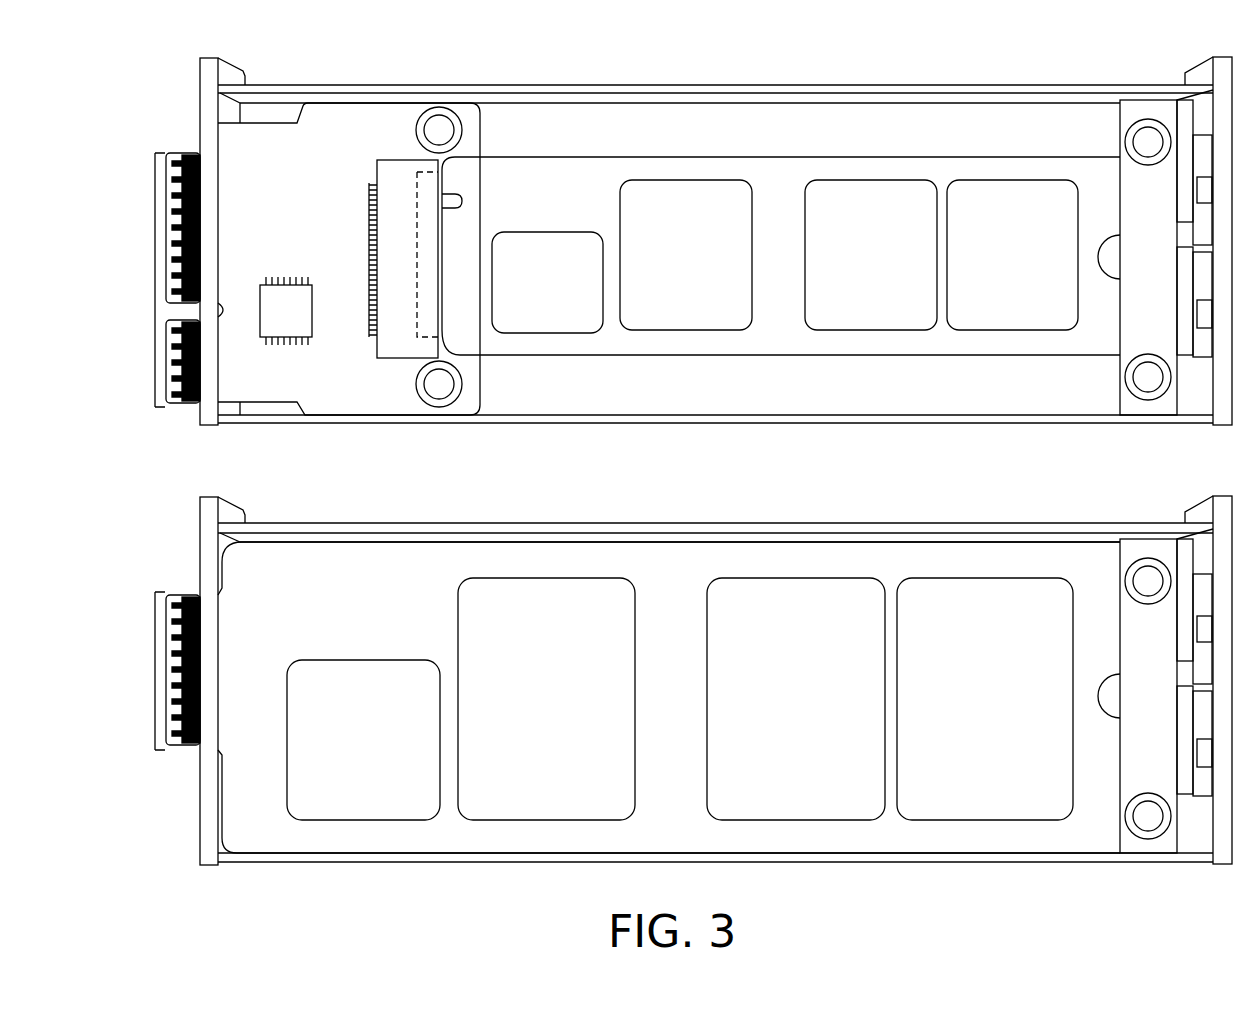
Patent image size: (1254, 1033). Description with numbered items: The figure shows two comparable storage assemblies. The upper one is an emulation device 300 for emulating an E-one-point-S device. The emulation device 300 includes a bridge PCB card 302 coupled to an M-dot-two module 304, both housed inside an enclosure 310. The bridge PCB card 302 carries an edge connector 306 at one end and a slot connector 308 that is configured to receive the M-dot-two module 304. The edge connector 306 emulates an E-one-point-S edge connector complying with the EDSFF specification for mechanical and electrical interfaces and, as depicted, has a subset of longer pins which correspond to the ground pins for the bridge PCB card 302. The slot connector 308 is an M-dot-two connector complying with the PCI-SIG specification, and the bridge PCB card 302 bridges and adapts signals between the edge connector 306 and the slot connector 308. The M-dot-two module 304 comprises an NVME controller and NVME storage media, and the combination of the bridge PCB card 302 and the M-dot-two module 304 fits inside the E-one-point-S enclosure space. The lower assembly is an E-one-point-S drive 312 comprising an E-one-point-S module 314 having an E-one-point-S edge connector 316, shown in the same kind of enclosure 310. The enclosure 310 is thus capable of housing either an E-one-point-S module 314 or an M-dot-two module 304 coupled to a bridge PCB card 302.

The emulation device 300 is at (182, 98).
The bridge PCB card 302 is at (349, 259).
The M.2 module 304 is at (781, 256).
The edge connector 306 is at (155, 280).
The slot connector 308 is at (398, 178).
The enclosure 310 is at (868, 83).
The E1.S drive 312 is at (165, 535).
The E1.S module 314 is at (669, 697).
The E1.S edge connector 316 is at (155, 672).